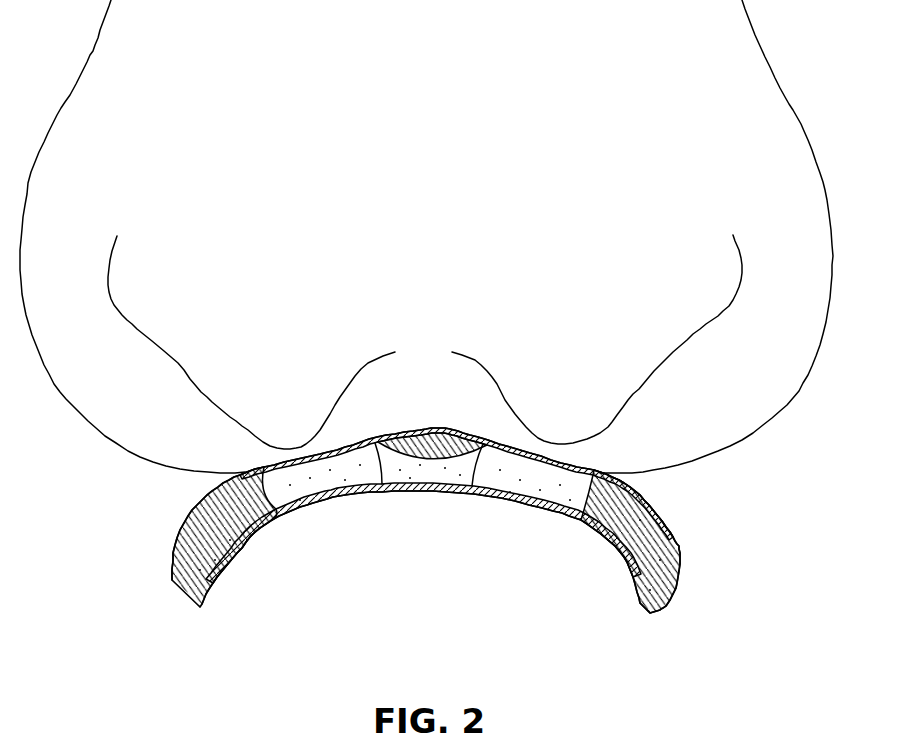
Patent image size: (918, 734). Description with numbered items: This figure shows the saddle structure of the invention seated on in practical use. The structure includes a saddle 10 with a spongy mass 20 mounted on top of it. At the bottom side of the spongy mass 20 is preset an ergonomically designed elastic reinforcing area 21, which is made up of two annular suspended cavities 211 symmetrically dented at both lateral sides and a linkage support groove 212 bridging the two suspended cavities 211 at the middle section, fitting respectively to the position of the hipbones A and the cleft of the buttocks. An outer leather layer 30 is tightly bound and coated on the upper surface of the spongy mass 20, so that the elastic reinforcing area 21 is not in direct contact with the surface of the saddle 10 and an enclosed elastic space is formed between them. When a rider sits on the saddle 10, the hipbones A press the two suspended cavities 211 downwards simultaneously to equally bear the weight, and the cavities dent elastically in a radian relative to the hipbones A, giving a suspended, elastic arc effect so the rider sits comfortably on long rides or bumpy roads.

The saddle 10 is at (267, 558).
The hipbones A is at (193, 428).
The outer leather layer 30 is at (705, 564).
The elastic reinforcing area 21 is at (593, 500).
The spongy mass 20 is at (622, 583).
The suspended cavities 211 is at (323, 488).
The linkage support groove 212 is at (434, 470).